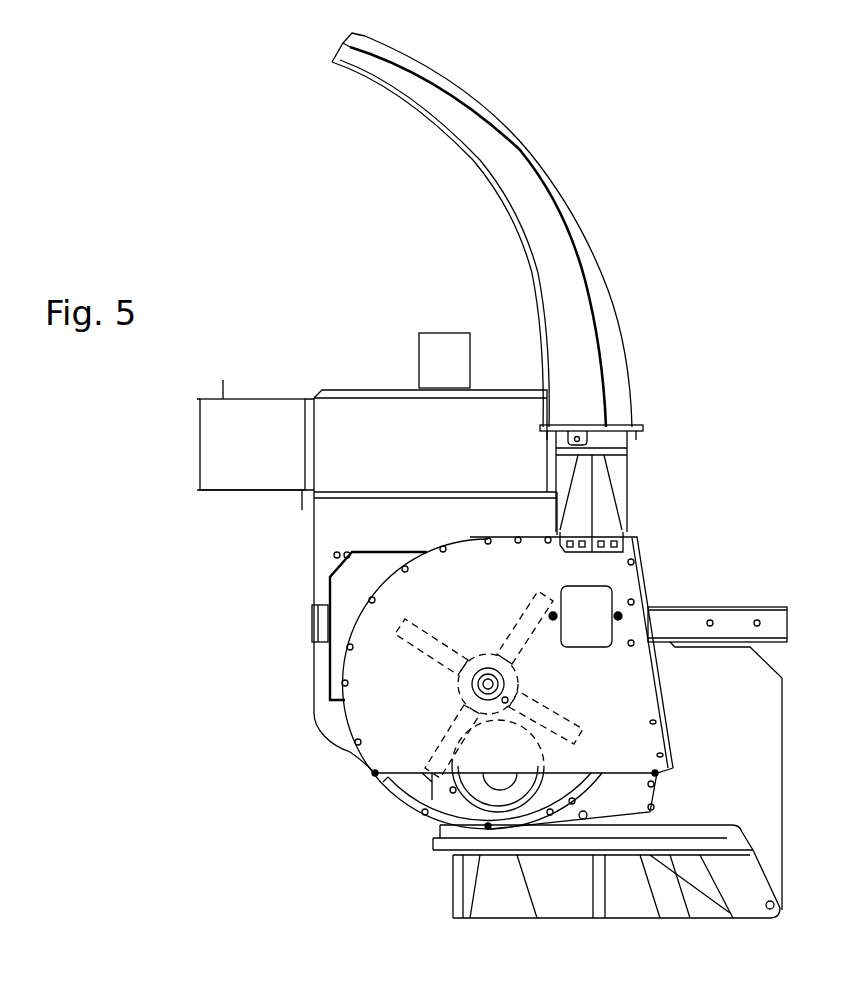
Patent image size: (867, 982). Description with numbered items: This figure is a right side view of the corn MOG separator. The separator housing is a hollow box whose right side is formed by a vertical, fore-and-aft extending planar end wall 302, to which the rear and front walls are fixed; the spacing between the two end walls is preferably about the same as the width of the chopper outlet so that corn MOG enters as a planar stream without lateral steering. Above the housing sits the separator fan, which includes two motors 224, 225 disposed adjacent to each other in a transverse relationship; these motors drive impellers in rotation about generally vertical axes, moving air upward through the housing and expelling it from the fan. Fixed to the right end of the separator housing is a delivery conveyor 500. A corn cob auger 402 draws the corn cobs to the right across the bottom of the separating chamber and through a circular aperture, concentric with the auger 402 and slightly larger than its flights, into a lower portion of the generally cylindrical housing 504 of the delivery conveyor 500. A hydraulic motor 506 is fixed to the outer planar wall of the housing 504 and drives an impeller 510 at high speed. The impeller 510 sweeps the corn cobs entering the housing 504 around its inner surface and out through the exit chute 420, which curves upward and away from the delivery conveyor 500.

The exit chute 420 is at (518, 140).
The motor 224 is at (357, 318).
The motor 225 is at (429, 333).
The end wall 302 is at (377, 524).
The impeller 510 is at (398, 634).
The hydraulic motor 506 is at (484, 688).
The delivery conveyor 500 is at (355, 772).
The housing 504 is at (453, 792).
The corn cob auger 402 is at (477, 789).